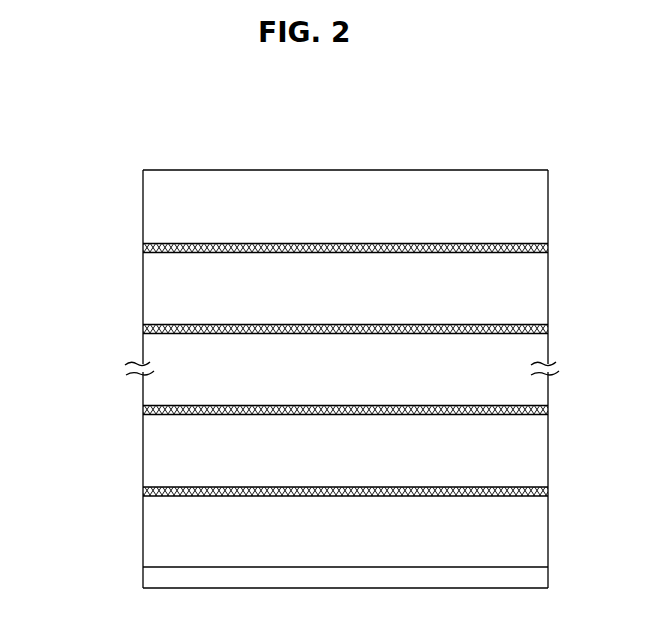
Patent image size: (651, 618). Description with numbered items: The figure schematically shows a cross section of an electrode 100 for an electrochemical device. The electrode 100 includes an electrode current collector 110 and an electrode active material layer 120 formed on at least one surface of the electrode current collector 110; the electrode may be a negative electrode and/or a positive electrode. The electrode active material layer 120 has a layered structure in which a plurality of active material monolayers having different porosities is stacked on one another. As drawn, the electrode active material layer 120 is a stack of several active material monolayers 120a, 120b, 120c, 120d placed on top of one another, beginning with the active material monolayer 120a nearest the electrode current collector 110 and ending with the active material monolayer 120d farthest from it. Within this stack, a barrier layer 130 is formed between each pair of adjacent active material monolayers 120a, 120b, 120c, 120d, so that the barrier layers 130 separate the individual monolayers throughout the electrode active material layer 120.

The electrode 100 is at (178, 137).
The electrode current collector 110 is at (143, 574).
The electrode active material layer 120 is at (72, 213).
The active material monolayer 120a is at (143, 528).
The active material monolayer 120b is at (143, 453).
The active material monolayer 120c is at (143, 290).
The active material monolayer 120d is at (143, 213).
The barrier layer 130 is at (548, 248).